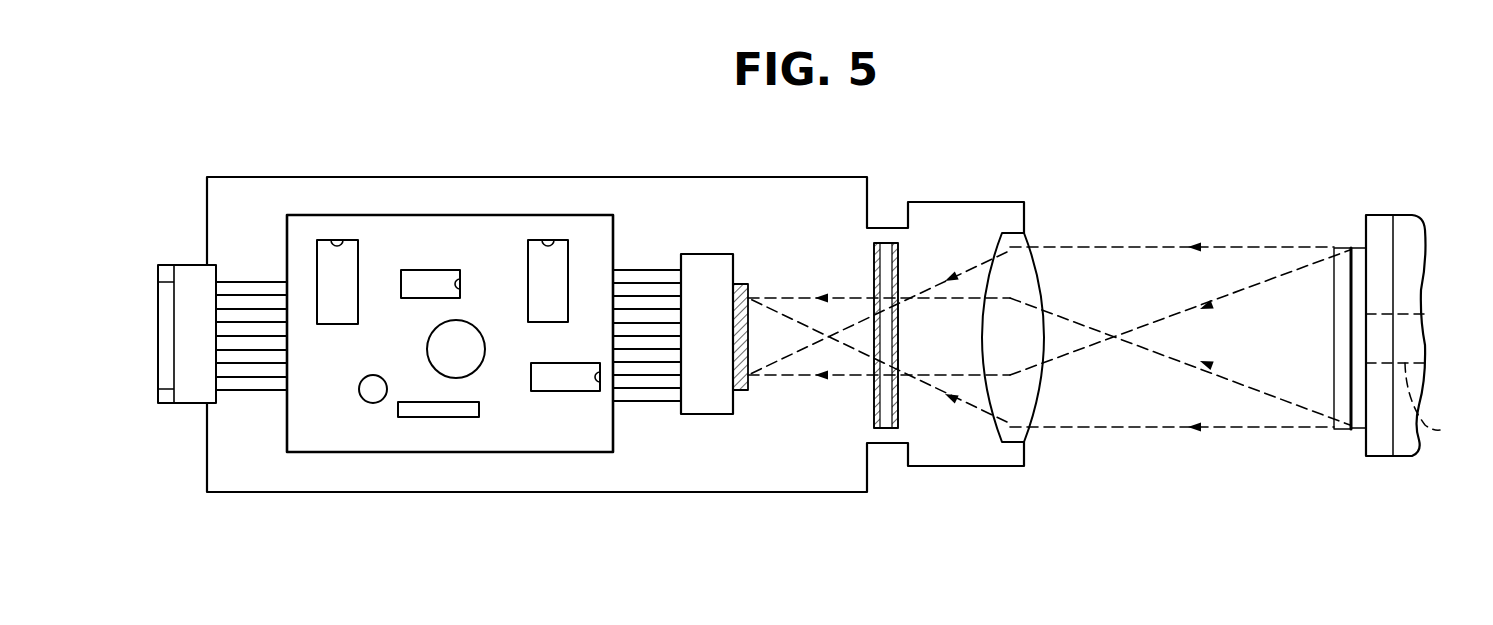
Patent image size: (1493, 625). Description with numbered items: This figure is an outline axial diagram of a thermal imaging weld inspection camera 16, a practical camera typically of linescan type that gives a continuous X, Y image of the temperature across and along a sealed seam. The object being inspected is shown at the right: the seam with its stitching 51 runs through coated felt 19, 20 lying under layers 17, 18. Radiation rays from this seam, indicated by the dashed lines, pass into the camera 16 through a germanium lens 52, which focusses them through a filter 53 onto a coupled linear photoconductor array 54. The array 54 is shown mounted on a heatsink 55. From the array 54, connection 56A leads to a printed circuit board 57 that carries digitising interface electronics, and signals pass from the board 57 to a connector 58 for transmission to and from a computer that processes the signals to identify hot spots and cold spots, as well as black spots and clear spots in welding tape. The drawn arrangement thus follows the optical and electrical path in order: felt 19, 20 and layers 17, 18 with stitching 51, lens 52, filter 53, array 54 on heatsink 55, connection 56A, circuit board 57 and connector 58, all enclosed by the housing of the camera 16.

The thermal imaging camera 16 is at (446, 150).
The layer 17 is at (1343, 430).
The layer 18 is at (1359, 250).
The coated felt 19 is at (1408, 456).
The coated felt 20 is at (1381, 455).
The stitching 51 is at (1416, 369).
The germanium lens 52 is at (1010, 231).
The filter 53 is at (882, 257).
The linear photoconductor array 54 is at (748, 382).
The heatsink 55 is at (700, 407).
The connection 56A is at (643, 250).
The printed circuit board 57 is at (517, 435).
The connector 58 is at (168, 267).